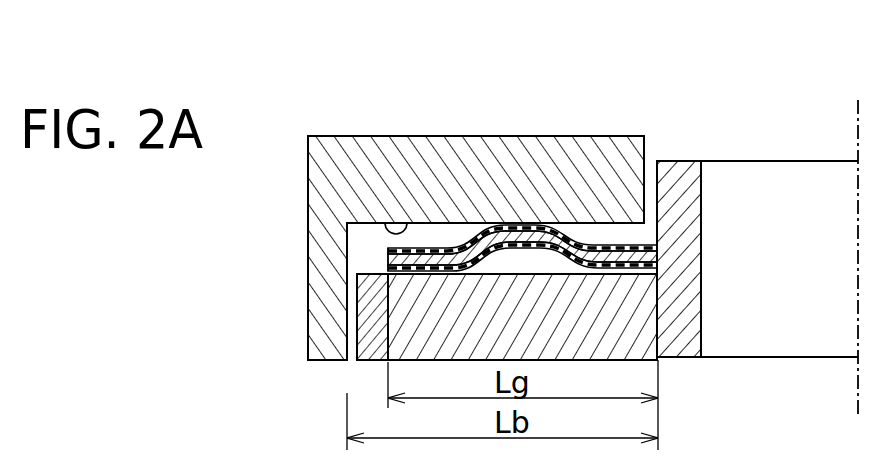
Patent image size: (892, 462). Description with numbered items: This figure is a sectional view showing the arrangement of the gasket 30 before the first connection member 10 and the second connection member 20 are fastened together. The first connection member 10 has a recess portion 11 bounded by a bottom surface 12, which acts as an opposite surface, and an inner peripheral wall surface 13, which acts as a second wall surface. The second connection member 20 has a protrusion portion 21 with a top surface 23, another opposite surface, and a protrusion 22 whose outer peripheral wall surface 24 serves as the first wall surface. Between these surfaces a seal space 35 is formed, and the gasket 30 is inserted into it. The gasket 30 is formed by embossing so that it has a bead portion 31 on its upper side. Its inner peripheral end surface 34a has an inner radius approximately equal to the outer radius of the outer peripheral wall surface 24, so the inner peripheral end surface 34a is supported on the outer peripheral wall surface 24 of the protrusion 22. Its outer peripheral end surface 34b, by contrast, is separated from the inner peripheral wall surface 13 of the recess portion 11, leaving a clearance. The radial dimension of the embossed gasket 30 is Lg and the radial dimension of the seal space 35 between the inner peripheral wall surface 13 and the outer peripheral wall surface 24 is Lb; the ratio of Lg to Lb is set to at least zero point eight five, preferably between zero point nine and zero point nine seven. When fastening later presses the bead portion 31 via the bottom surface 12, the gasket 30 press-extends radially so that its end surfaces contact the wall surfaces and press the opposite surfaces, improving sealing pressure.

The first connection member 10 is at (384, 112).
The recess portion 11 is at (366, 265).
The bottom surface 12 is at (408, 222).
The inner peripheral wall surface 13 is at (358, 220).
The second connection member 20 is at (372, 368).
The protrusion portion 21 is at (372, 315).
The protrusion 22 is at (683, 170).
The top surface 23 is at (535, 270).
The outer peripheral wall surface 24 is at (655, 187).
The gasket 30 is at (615, 253).
The bead portion 31 is at (490, 233).
The inner peripheral end surface 34a is at (657, 256).
The outer peripheral end surface 34b is at (387, 257).
The seal space 35 is at (583, 232).